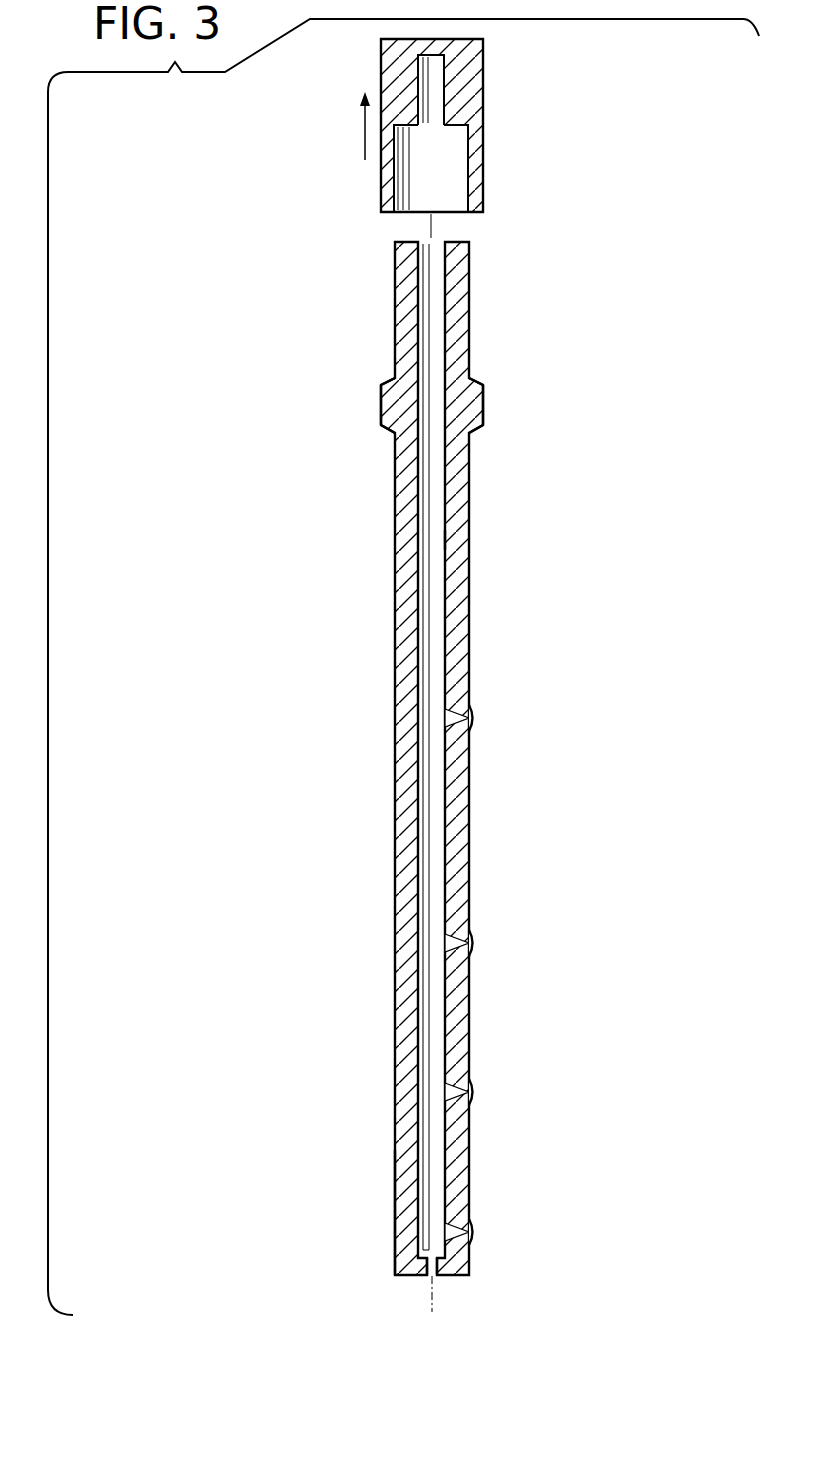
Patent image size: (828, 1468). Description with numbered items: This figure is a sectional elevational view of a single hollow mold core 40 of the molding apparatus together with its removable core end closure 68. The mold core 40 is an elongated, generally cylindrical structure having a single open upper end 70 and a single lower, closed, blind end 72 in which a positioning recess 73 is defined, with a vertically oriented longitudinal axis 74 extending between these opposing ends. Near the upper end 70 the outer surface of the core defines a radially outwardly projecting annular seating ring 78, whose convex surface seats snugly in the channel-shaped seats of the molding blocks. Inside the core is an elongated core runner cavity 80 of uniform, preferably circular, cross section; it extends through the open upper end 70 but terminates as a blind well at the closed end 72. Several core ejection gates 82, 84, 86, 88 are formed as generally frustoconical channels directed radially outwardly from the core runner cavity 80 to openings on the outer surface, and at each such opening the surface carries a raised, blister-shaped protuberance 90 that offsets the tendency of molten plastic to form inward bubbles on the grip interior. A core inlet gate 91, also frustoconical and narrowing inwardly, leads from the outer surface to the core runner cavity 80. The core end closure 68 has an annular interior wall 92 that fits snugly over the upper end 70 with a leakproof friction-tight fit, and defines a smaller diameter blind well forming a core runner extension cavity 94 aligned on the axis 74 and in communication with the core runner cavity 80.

The mold core 40 is at (553, 324).
The removable core end closure 68 is at (491, 125).
The open upper end 70 is at (469, 275).
The lower closed blind end 72 is at (395, 1225).
The positioning recess 73 is at (430, 1278).
The longitudinal axis 74 is at (433, 1300).
The annular seating ring 78 is at (483, 404).
The core runner cavity 80 is at (445, 537).
The core ejection gate 82 is at (450, 712).
The core ejection gate 84 is at (449, 939).
The core ejection gate 86 is at (449, 1088).
The core ejection gate 88 is at (450, 1232).
The blister-shaped protuberance 90 is at (473, 721).
The core inlet gate 91 is at (406, 511).
The annular interior wall 92 is at (465, 184).
The core runner extension cavity 94 is at (441, 83).